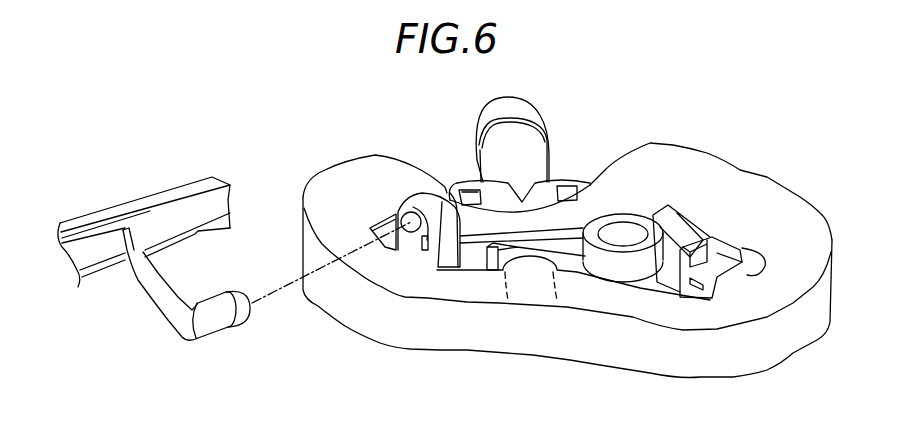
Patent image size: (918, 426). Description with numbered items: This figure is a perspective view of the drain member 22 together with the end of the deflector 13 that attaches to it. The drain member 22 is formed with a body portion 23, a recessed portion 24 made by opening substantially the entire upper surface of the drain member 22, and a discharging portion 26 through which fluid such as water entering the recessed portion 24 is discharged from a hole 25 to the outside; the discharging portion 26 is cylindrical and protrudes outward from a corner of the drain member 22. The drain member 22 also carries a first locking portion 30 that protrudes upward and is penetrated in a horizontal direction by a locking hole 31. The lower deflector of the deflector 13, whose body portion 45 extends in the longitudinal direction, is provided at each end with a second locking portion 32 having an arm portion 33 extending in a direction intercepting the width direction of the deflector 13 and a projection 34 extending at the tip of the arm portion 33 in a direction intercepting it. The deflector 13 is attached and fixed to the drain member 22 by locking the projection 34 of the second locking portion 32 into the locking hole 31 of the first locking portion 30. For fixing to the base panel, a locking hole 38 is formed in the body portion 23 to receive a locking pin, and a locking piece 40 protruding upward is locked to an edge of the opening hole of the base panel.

The deflector 13 is at (147, 196).
The body portion 45 is at (93, 215).
The arm portion 33 is at (150, 283).
The second locking portion 32 is at (155, 310).
The projection 34 is at (237, 322).
The drain member 22 is at (302, 215).
The body portion 23 is at (677, 150).
The first locking portion 30 is at (426, 195).
The locking hole 31 is at (403, 215).
The hole 25 is at (538, 258).
The discharging portion 26 is at (529, 127).
The locking hole 38 is at (623, 226).
The recessed portion 24 is at (688, 223).
The locking piece 40 is at (739, 245).